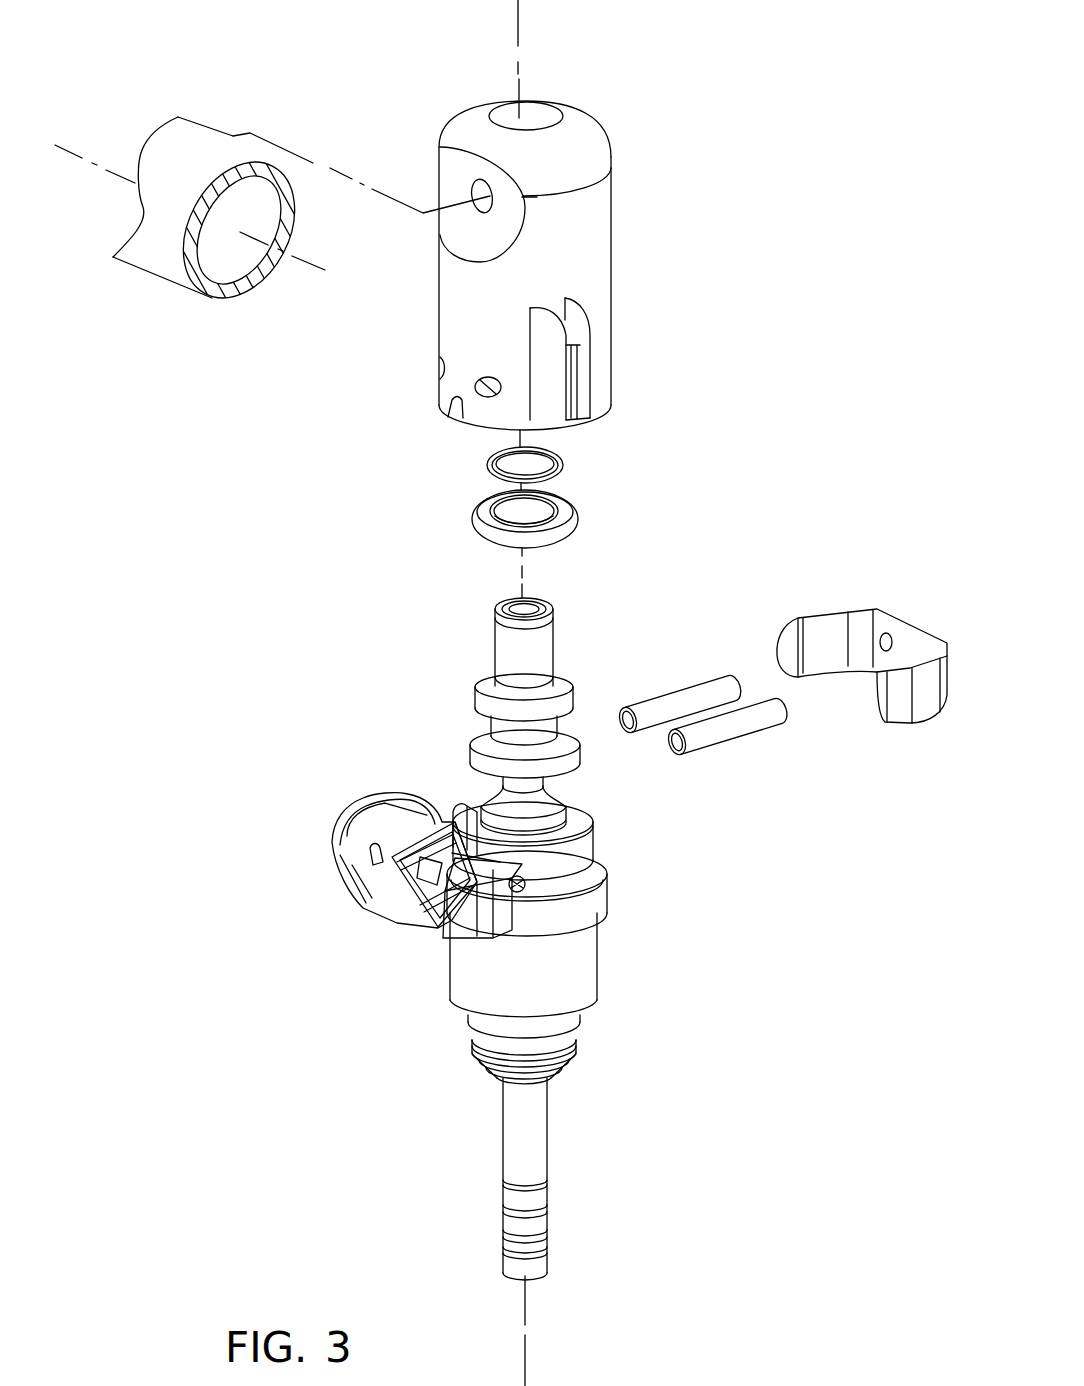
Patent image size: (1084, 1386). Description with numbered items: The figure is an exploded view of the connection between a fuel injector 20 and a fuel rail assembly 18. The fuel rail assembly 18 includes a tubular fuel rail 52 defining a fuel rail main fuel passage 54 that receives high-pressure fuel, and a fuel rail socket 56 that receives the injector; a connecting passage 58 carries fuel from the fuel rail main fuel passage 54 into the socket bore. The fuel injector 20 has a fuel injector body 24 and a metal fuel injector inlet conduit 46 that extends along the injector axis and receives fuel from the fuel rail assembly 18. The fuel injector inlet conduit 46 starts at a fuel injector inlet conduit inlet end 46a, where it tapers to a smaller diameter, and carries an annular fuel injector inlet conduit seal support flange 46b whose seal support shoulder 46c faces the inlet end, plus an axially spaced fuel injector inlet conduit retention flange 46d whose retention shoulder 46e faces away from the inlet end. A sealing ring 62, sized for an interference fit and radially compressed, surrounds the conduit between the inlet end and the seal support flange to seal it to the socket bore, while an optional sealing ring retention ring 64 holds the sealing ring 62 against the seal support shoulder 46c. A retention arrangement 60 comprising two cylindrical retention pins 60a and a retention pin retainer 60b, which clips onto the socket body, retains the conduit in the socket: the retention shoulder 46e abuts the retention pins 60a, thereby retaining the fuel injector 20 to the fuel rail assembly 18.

The fuel rail assembly 18 is at (543, 58).
The fuel injector 20 is at (489, 1036).
The fuel injector body 24 is at (588, 972).
The fuel injector inlet conduit 46 is at (485, 705).
The fuel injector inlet conduit inlet end 46a is at (501, 608).
The fuel injector inlet conduit seal support flange 46b is at (477, 703).
The seal support shoulder 46c is at (490, 688).
The fuel injector inlet conduit retention flange 46d is at (475, 762).
The retention shoulder 46e is at (563, 782).
The fuel rail 52 is at (272, 201).
The fuel rail main fuel passage 54 is at (233, 263).
The fuel rail socket 56 is at (558, 250).
The connecting passage 58 is at (487, 197).
The retention arrangement 60 is at (782, 640).
The retention pins 60a is at (693, 740).
The retention pin retainer 60b is at (848, 610).
The sealing ring 62 is at (482, 527).
The sealing ring retention ring 64 is at (562, 465).